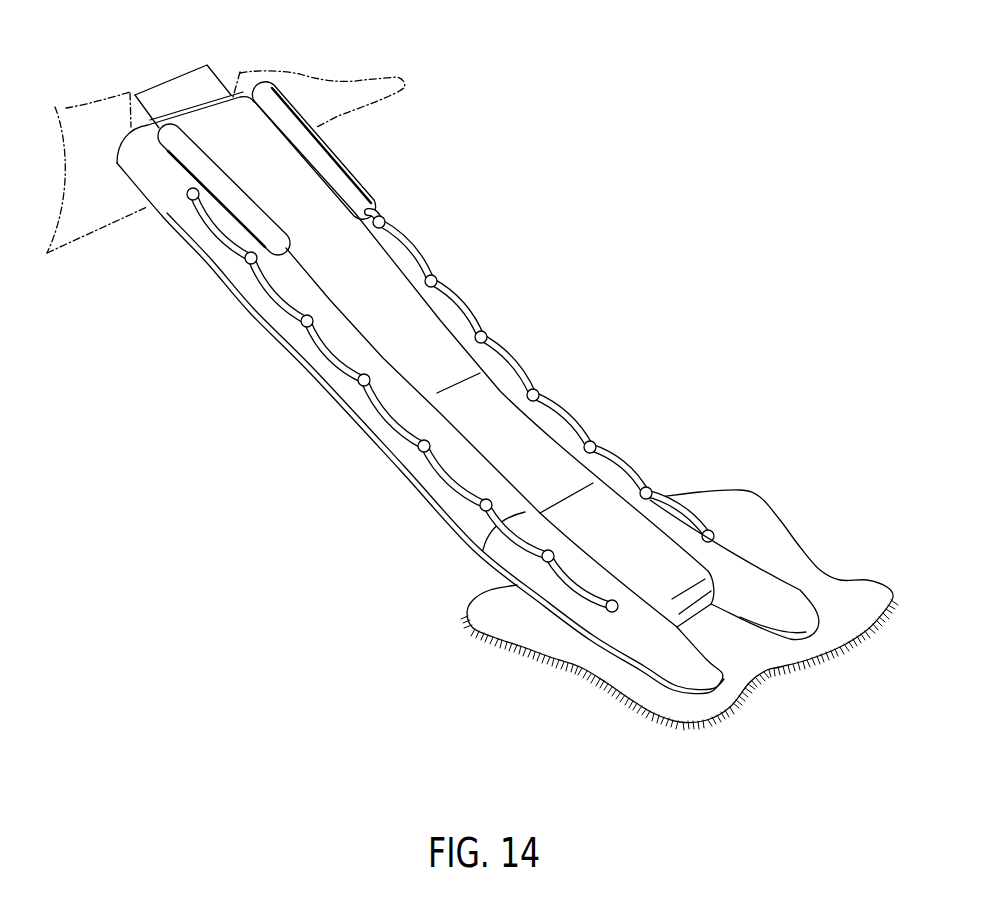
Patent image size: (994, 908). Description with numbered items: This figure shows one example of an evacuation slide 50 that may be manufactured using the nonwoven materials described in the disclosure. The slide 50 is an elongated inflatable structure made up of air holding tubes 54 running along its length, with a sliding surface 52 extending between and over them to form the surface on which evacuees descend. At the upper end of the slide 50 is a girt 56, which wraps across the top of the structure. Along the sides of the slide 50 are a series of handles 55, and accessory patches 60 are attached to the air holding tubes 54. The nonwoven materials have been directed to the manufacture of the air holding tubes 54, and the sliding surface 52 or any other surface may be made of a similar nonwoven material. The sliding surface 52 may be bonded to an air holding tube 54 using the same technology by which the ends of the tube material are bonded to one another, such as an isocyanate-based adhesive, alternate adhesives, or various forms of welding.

The evacuation slide 50 is at (577, 233).
The sliding surface 52 is at (508, 430).
The air holding tubes 54 is at (377, 430).
The handles 55 is at (410, 245).
The girt 56 is at (173, 73).
The accessory patches 60 is at (192, 200).